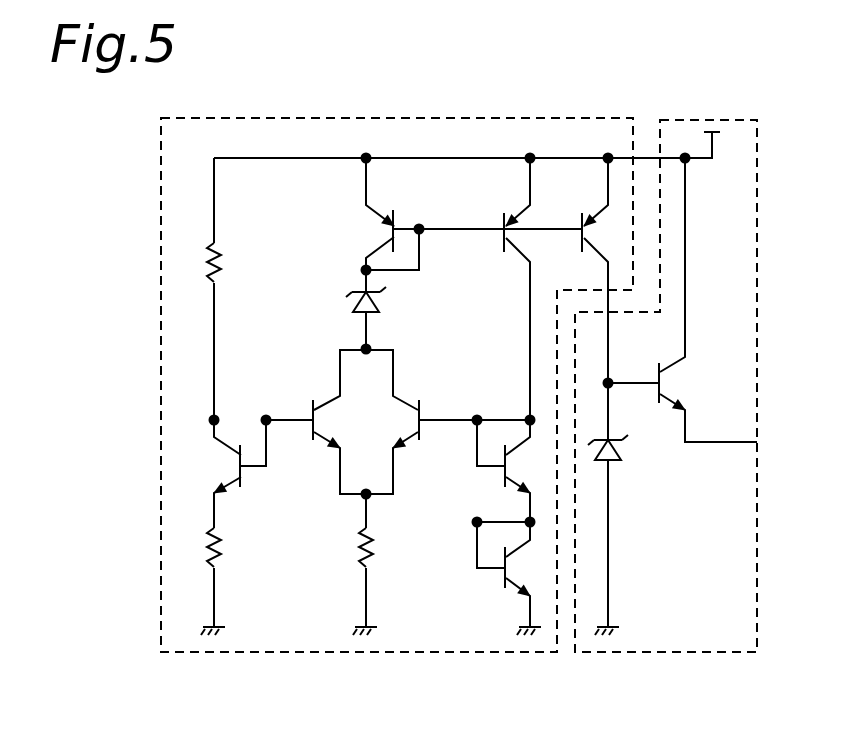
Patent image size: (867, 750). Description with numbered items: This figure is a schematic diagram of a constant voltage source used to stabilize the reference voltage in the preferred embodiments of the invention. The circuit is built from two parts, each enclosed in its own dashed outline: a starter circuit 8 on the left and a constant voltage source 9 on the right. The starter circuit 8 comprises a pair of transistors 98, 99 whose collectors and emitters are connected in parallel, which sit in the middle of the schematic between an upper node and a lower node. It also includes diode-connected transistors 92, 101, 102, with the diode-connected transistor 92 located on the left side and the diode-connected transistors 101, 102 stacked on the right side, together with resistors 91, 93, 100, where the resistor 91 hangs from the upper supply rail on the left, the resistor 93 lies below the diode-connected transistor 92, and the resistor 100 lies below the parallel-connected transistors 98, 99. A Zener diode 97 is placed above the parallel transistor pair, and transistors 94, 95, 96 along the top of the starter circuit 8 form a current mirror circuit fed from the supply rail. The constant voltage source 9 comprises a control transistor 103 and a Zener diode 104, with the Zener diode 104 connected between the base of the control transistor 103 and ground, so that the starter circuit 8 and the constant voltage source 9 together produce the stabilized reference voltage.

The starter circuit 8 is at (463, 118).
The constant voltage source 9 is at (730, 120).
The resistor 91 is at (222, 266).
The diode-connected transistor 92 is at (232, 472).
The resistor 93 is at (222, 551).
The transistor 94 is at (386, 229).
The transistor 95 is at (510, 214).
The transistor 96 is at (592, 214).
The Zener diode 97 is at (384, 300).
The transistor 98 is at (322, 400).
The transistor 99 is at (412, 402).
The resistor 100 is at (374, 551).
The diode-connected transistor 101 is at (508, 484).
The diode-connected transistor 102 is at (510, 598).
The control transistor 103 is at (672, 386).
The Zener diode 104 is at (618, 452).